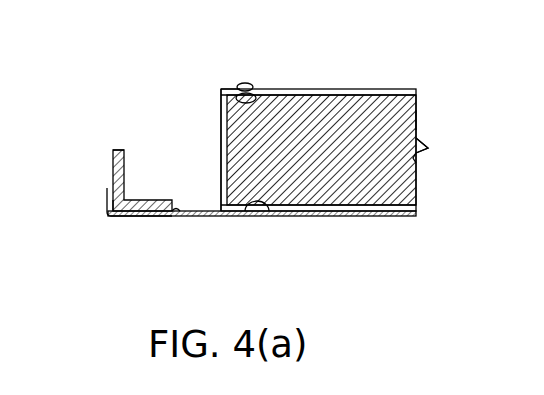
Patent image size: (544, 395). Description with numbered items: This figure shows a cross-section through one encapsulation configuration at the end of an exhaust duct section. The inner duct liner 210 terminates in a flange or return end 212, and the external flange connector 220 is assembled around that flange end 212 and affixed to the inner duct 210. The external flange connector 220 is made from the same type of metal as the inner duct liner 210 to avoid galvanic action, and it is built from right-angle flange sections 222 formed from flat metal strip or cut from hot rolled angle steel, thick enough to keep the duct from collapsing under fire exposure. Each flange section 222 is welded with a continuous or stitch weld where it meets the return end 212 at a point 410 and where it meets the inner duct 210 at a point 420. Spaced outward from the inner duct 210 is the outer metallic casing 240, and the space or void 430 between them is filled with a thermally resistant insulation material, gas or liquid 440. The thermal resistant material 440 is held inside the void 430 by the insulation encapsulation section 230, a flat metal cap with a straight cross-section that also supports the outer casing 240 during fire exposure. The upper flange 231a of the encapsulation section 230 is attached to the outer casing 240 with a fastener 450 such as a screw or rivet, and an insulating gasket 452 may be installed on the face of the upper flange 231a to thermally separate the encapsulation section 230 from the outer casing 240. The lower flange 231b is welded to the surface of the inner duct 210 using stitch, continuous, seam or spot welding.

The inner metallic duct 210 is at (135, 216).
The flange 212 is at (109, 203).
The external flange connector 220 is at (180, 157).
The flange section 222 is at (114, 150).
The insulation encapsulation section 230 is at (221, 122).
The upper flange 231a is at (275, 89).
The lower flange 231b is at (268, 216).
The outer metallic casing 240 is at (349, 90).
The weld point 410 is at (108, 190).
The weld point 420 is at (170, 217).
The void 430 is at (433, 132).
The thermally resistant insulation material 440 is at (419, 119).
The fastener 450 is at (245, 84).
The insulating gasket 452 is at (222, 92).